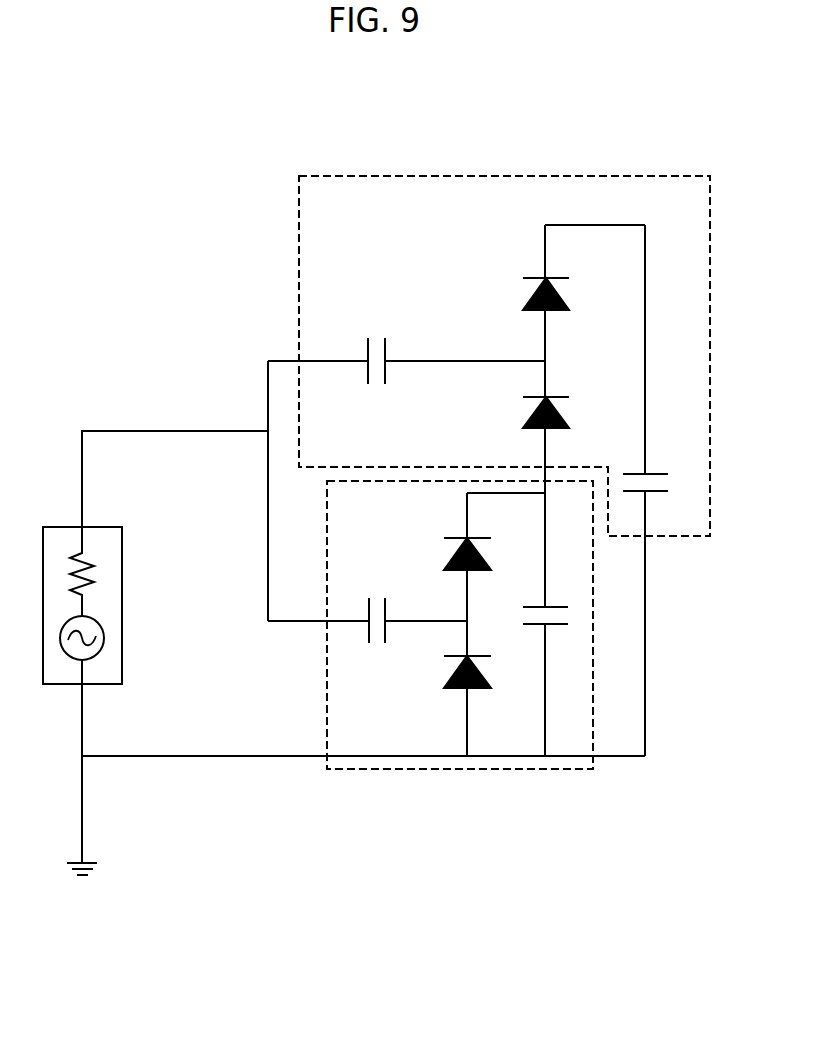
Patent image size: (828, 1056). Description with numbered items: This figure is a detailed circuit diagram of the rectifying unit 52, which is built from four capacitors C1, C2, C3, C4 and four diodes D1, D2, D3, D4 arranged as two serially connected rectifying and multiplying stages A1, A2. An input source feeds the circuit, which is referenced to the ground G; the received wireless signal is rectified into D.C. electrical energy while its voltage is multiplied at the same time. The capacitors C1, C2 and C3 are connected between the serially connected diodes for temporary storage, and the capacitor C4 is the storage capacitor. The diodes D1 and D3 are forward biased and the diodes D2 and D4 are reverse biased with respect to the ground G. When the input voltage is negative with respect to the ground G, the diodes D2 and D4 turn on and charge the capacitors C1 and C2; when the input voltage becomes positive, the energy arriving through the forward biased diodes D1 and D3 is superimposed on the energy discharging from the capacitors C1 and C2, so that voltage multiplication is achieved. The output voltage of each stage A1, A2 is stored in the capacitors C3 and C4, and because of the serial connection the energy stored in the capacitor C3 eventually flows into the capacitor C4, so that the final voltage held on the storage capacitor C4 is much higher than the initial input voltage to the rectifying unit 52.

The rectifying unit 52 is at (475, 108).
The rectifying and multiplying stage A1 is at (299, 254).
The rectifying and multiplying stage A2 is at (460, 769).
The capacitor C1 is at (406, 343).
The capacitor C2 is at (367, 605).
The capacitor C3 is at (553, 598).
The storage capacitor C4 is at (659, 463).
The forward biased diode D1 is at (561, 295).
The reverse biased diode D2 is at (561, 412).
The forward biased diode D3 is at (483, 555).
The reverse biased diode D4 is at (483, 672).
The ground G is at (97, 869).
The AC voltage source is at (104, 588).